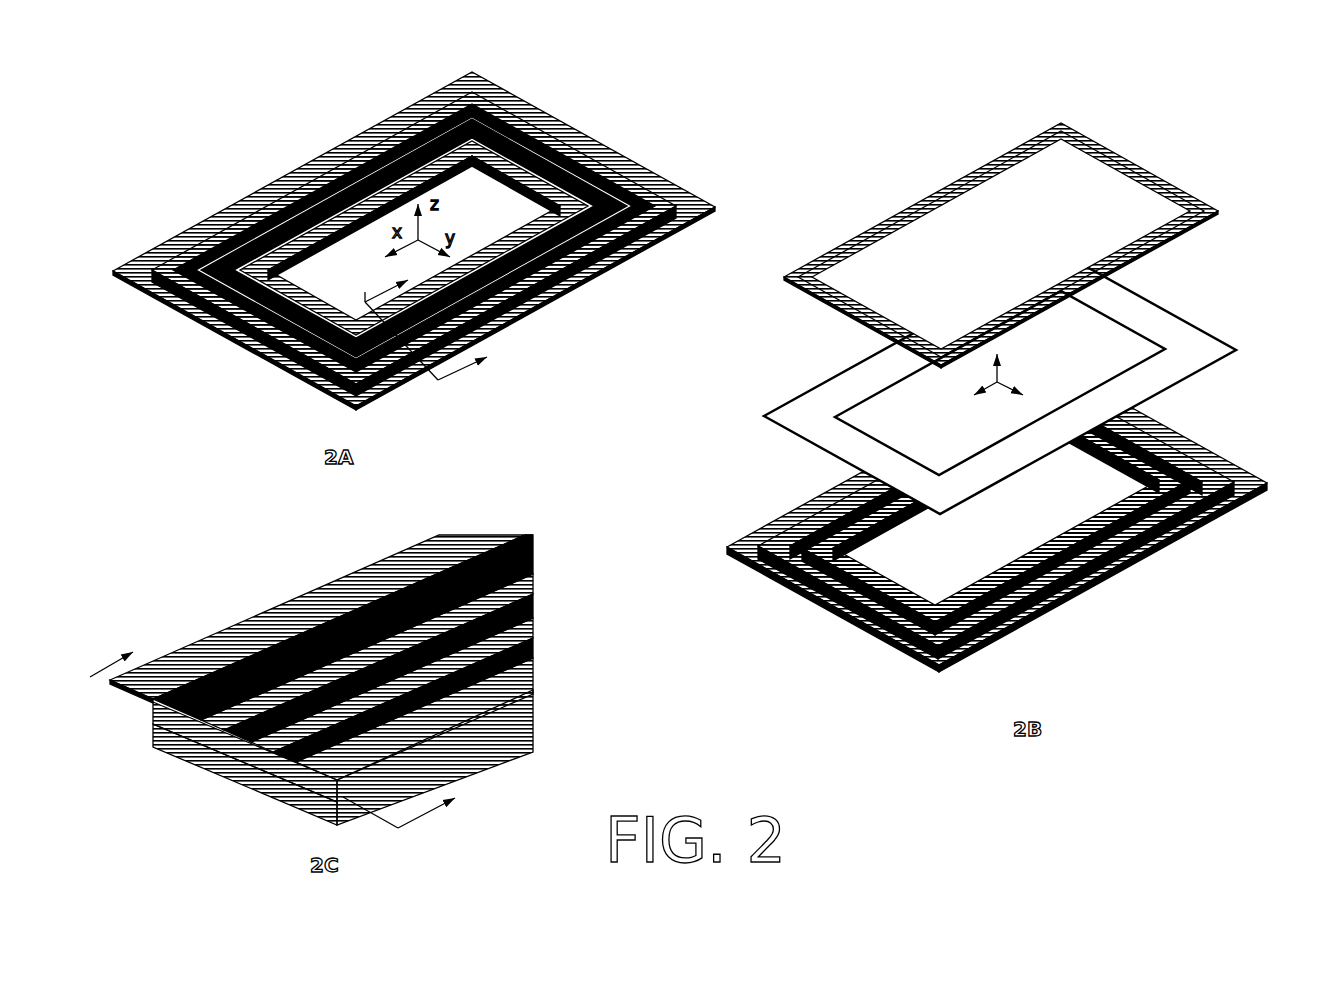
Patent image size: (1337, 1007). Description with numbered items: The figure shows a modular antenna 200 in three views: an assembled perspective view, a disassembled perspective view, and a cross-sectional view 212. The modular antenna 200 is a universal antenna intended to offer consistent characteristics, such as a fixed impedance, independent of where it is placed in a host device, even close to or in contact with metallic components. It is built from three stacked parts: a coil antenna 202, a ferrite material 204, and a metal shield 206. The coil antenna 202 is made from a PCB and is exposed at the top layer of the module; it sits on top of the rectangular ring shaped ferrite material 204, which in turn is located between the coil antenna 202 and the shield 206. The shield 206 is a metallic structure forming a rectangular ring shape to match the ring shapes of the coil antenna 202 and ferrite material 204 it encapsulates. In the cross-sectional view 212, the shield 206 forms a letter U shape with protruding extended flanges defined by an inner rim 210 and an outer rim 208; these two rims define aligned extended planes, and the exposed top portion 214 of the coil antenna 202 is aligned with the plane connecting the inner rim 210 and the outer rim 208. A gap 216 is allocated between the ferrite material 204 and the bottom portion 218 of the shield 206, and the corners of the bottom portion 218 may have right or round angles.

In FIG. 2A, the modular antenna 200 is at (414, 241).
In FIG. 2A, the coil antenna 202 is at (414, 238).
In FIG. 2B, the coil antenna 202 is at (915, 171).
In FIG. 2A, the ferrite material 204 is at (273, 156).
In FIG. 2B, the ferrite material 204 is at (821, 353).
In FIG. 2A, the shield 206 is at (414, 244).
In FIG. 2B, the shield 206 is at (780, 491).
In FIG. 2A, the outer rim 208 is at (414, 241).
In FIG. 2B, the outer rim 208 is at (1238, 456).
In FIG. 2C, the outer rim 208 is at (493, 730).
In FIG. 2B, the inner rim 210 is at (1046, 527).
In FIG. 2C, the inner rim 210 is at (258, 622).
In FIG. 2A, the cross-sectional view 212 is at (441, 392).
In FIG. 2C, the cross-sectional view 212 is at (399, 831).
In FIG. 2C, the top portion 214 is at (236, 720).
In FIG. 2C, the gap 216 is at (201, 758).
In FIG. 2C, the bottom portion 218 is at (258, 806).